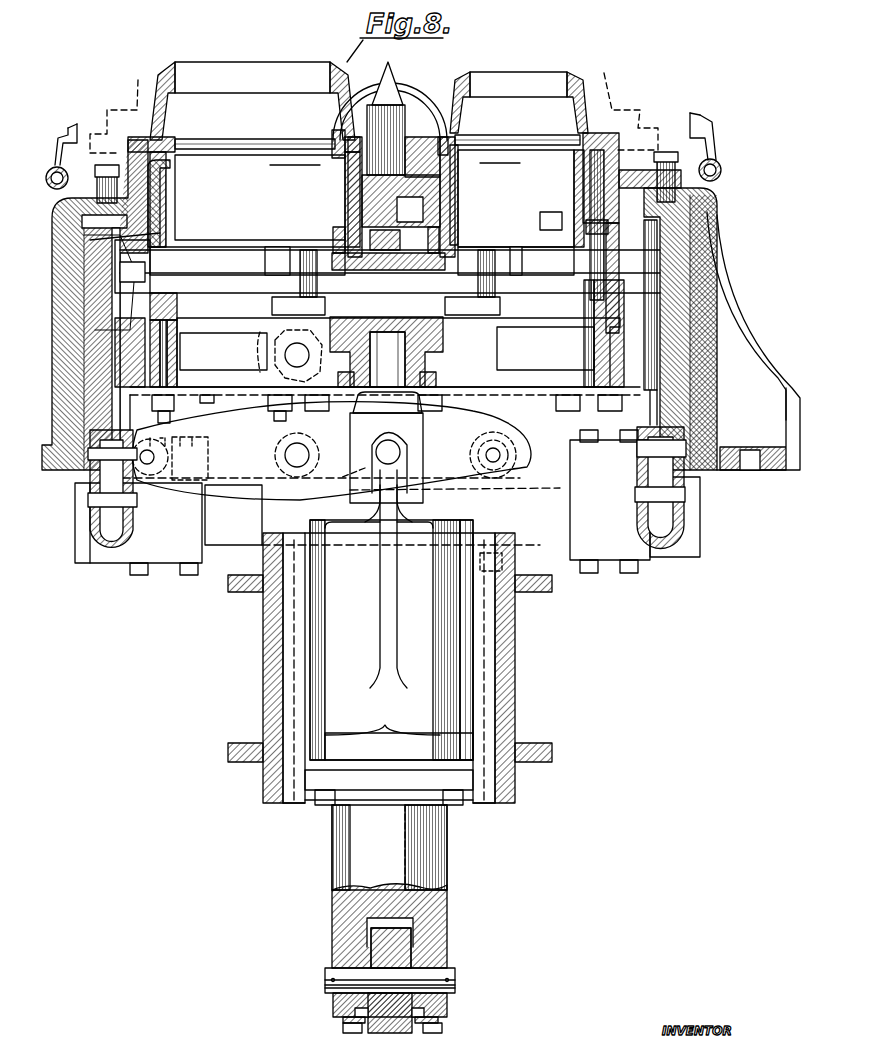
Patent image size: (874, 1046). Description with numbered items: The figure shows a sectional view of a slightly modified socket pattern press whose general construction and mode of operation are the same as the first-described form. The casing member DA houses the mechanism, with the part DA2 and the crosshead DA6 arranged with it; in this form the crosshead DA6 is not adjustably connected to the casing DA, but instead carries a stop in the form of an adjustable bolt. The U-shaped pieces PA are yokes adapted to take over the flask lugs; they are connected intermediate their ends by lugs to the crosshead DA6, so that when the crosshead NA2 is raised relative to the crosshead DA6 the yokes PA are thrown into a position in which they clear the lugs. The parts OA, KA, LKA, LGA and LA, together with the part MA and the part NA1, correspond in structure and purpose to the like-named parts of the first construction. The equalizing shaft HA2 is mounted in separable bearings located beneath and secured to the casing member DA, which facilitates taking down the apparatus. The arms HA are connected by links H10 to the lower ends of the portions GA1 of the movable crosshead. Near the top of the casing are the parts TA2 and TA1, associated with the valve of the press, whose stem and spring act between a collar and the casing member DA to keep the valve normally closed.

The U-shaped piece PA is at (430, 78).
The part DA2 is at (376, 130).
The part TA2 is at (706, 130).
The part TA1 is at (722, 170).
The portion GA' GA1 is at (140, 248).
The casing member DA is at (705, 278).
The part OA is at (386, 348).
The part KA is at (543, 328).
The part LKA is at (143, 418).
The part LGA is at (277, 405).
The part LA is at (335, 451).
The equalizing shaft HA2 is at (235, 515).
The arm HA is at (125, 515).
The link H10 is at (125, 548).
The crosshead DA6 is at (508, 628).
The part MA is at (450, 690).
The part NA' NA1 is at (360, 845).
The crosshead NA2 is at (395, 940).